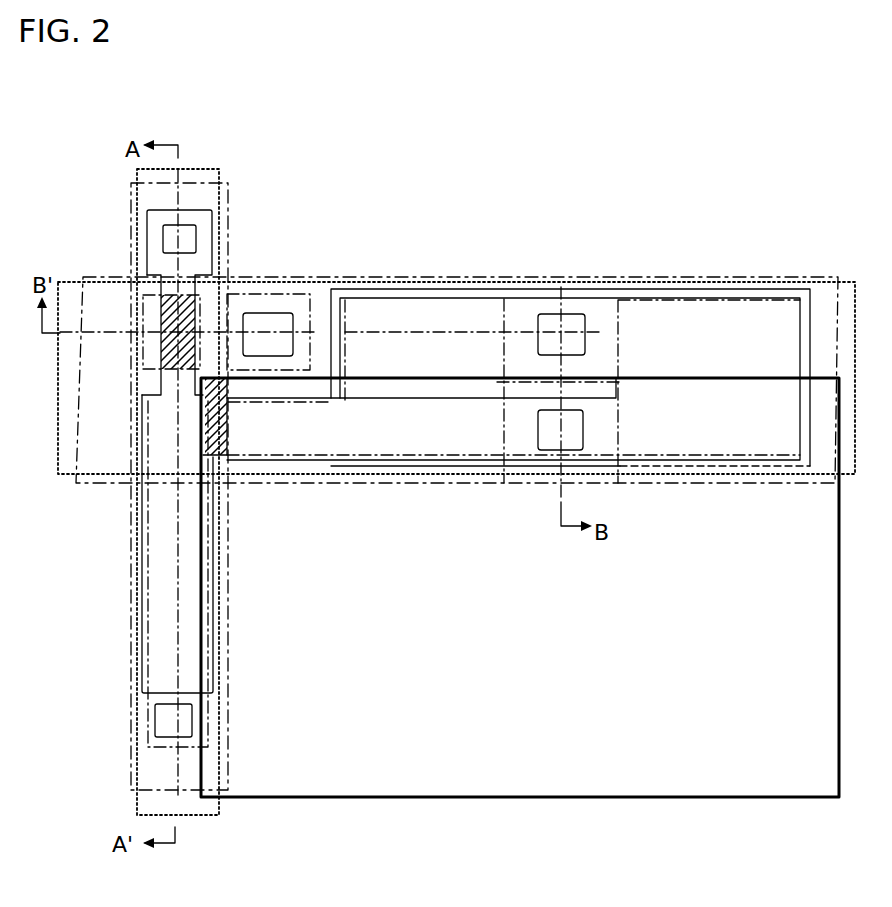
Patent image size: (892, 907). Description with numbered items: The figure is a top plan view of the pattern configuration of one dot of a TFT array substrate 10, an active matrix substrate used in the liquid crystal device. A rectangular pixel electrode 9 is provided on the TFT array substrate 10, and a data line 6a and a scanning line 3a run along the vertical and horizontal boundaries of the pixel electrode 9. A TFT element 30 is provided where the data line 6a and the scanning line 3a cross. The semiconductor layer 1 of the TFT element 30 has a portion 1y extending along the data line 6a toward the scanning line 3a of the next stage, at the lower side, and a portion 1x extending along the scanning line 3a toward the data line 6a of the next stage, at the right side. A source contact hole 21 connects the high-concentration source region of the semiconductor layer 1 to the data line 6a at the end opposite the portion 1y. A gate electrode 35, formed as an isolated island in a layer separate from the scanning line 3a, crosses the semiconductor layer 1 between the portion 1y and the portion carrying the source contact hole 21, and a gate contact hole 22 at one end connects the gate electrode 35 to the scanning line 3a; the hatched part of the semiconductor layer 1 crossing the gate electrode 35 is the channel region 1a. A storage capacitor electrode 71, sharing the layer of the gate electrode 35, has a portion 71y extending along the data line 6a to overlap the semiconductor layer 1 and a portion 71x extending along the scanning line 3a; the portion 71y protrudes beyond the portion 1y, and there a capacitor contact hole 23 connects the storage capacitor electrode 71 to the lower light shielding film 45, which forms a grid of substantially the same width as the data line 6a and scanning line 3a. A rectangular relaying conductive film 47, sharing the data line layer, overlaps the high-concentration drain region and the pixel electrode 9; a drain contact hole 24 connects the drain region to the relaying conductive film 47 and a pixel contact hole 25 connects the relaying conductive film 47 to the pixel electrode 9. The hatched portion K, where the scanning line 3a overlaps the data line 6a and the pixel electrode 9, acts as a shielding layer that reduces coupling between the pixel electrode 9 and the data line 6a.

The semiconductor layer 1 is at (444, 466).
The channel region 1a is at (162, 357).
The portion extending along the scanning line 1x is at (712, 322).
The portion extending along the data line 1y is at (158, 590).
The scanning line 3a is at (811, 277).
The data line 6a is at (196, 196).
The pixel electrode 9 is at (543, 800).
The TFT array substrate 10 is at (532, 186).
The source contact hole 21 is at (183, 226).
The gate contact hole 22 is at (293, 313).
The capacitor contact hole 23 is at (161, 729).
The drain contact hole 24 is at (577, 314).
The pixel contact hole 25 is at (553, 450).
The TFT element 30 is at (110, 267).
The gate electrode 35 is at (258, 294).
The lower light shielding film 45 is at (67, 478).
The relaying conductive film 47 is at (732, 445).
The storage capacitor electrode 71 is at (304, 468).
The portion of the storage capacitor electrode extending along the scanning line 71x is at (451, 312).
The portion of the storage capacitor electrode extending along the data line 71y is at (158, 642).
The overlapping portion K is at (227, 421).